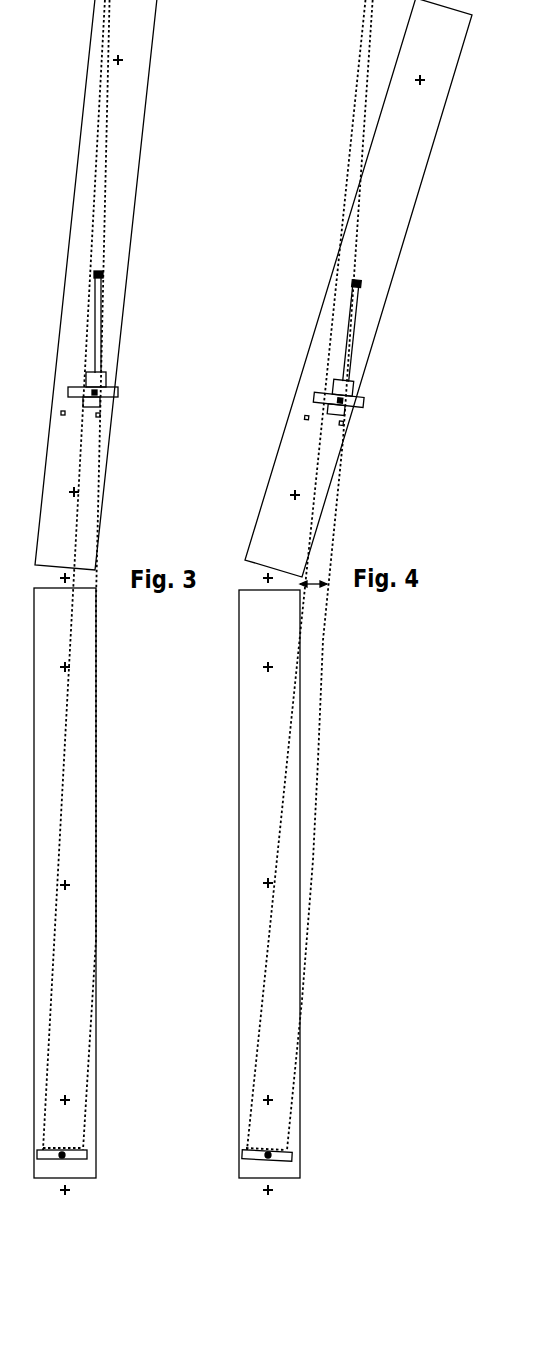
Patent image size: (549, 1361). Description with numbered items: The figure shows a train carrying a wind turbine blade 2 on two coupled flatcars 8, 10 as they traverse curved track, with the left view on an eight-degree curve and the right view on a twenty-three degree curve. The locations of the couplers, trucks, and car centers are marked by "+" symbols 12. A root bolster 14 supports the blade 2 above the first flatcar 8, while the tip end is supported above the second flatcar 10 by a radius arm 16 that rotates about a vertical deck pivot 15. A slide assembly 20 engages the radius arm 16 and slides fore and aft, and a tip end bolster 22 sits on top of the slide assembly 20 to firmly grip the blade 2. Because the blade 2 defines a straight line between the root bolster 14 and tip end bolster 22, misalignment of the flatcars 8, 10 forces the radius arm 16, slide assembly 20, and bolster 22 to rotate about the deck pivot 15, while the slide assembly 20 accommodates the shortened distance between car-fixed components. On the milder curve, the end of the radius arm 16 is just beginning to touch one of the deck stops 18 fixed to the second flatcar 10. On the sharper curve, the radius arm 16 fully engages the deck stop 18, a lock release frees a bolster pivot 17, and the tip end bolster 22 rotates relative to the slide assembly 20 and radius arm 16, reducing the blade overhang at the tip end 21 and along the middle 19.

In FIG. 3, the wind turbine blade 2 is at (68, 720).
In FIG. 4, the wind turbine blade 2 is at (320, 740).
In FIG. 3, the first flatcar 8 is at (35, 907).
In FIG. 4, the first flatcar 8 is at (239, 907).
In FIG. 3, the second flatcar 10 is at (68, 238).
In FIG. 4, the second flatcar 10 is at (331, 270).
In FIG. 3, the "+" symbols 12 is at (4, 580).
In FIG. 4, the "+" symbols 12 is at (268, 1190).
In FIG. 3, the root bolster 14 is at (46, 1160).
In FIG. 4, the root bolster 14 is at (275, 1162).
In FIG. 3, the deck pivot 15 is at (104, 274).
In FIG. 4, the deck pivot 15 is at (362, 284).
In FIG. 3, the radius arm 16 is at (103, 326).
In FIG. 4, the radius arm 16 is at (352, 327).
In FIG. 3, the bolster pivot 17 is at (86, 386).
In FIG. 4, the bolster pivot 17 is at (330, 390).
In FIG. 3, the deck stops 18 is at (96, 417).
In FIG. 4, the deck stops 18 is at (338, 424).
In FIG. 4, the middle overhang 19 is at (320, 588).
In FIG. 3, the slide assembly 20 is at (99, 388).
In FIG. 4, the slide assembly 20 is at (345, 400).
In FIG. 4, the tip end overhang 21 is at (388, 0).
In FIG. 3, the tip end bolster 22 is at (118, 396).
In FIG. 4, the tip end bolster 22 is at (362, 397).